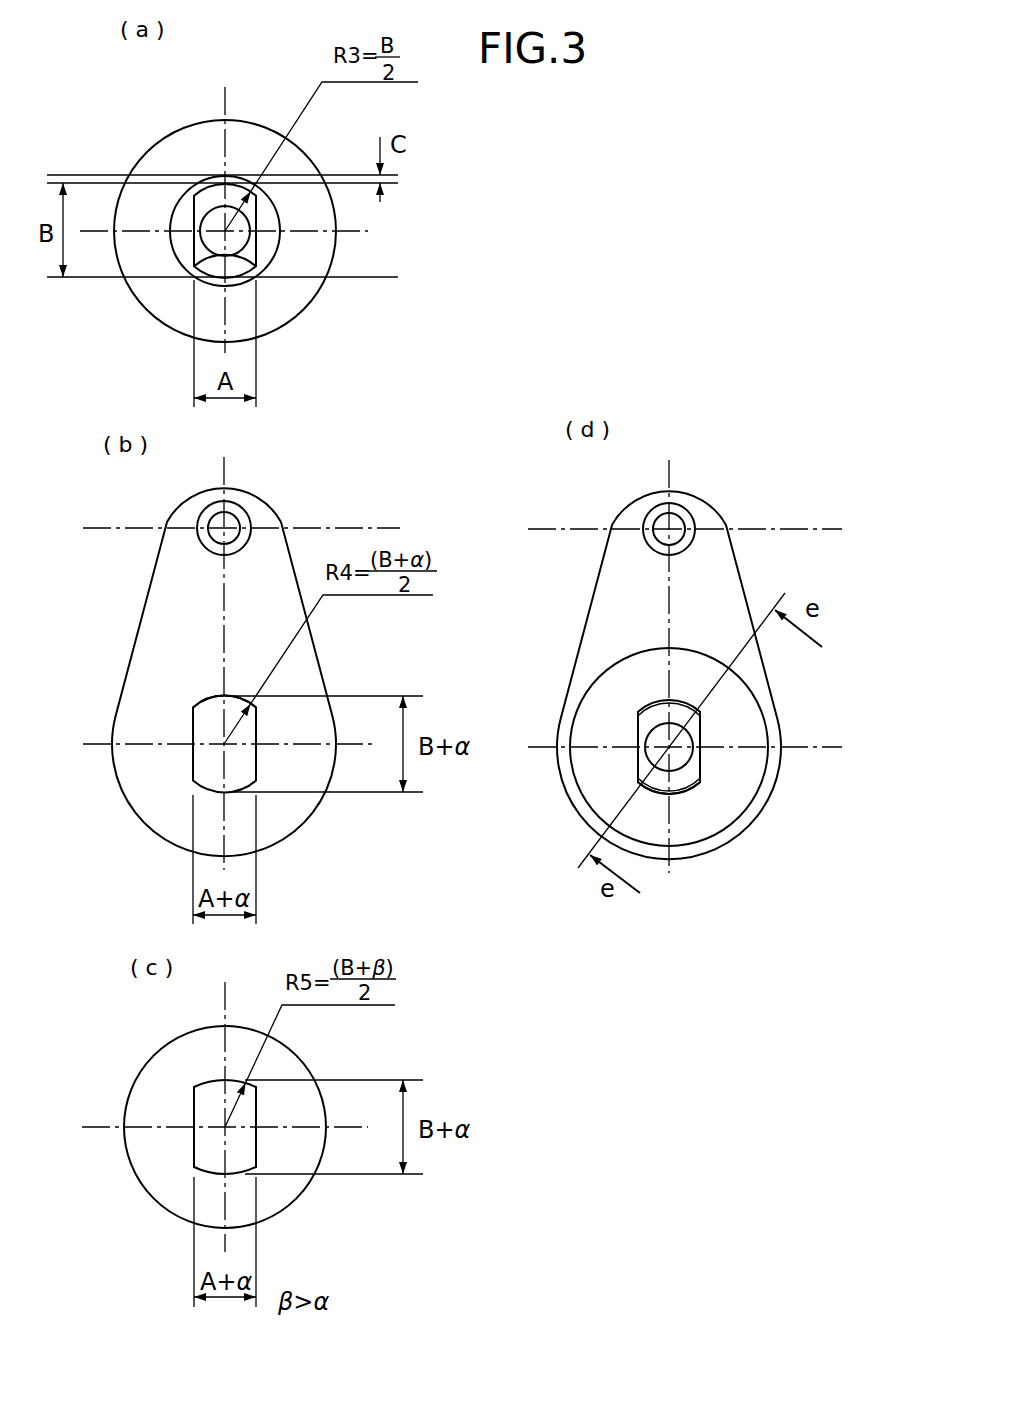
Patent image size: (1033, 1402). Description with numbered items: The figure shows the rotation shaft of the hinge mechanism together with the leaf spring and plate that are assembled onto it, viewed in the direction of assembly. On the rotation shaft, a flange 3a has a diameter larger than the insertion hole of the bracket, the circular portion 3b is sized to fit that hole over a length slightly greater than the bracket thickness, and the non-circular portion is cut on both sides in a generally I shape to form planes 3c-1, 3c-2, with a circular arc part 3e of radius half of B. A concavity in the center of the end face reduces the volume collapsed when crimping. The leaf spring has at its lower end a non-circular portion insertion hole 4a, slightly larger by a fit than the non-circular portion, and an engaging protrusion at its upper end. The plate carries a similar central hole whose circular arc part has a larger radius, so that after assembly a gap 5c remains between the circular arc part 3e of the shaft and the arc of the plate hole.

The flange 3a is at (275, 313).
The circular portion 3b is at (180, 250).
The plane 3c-1 is at (192, 217).
The plane 3c-2 is at (255, 214).
The circular arc part 3e is at (238, 184).
The non-circular portion insertion hole 4a is at (195, 718).
The gap 5c is at (643, 710).